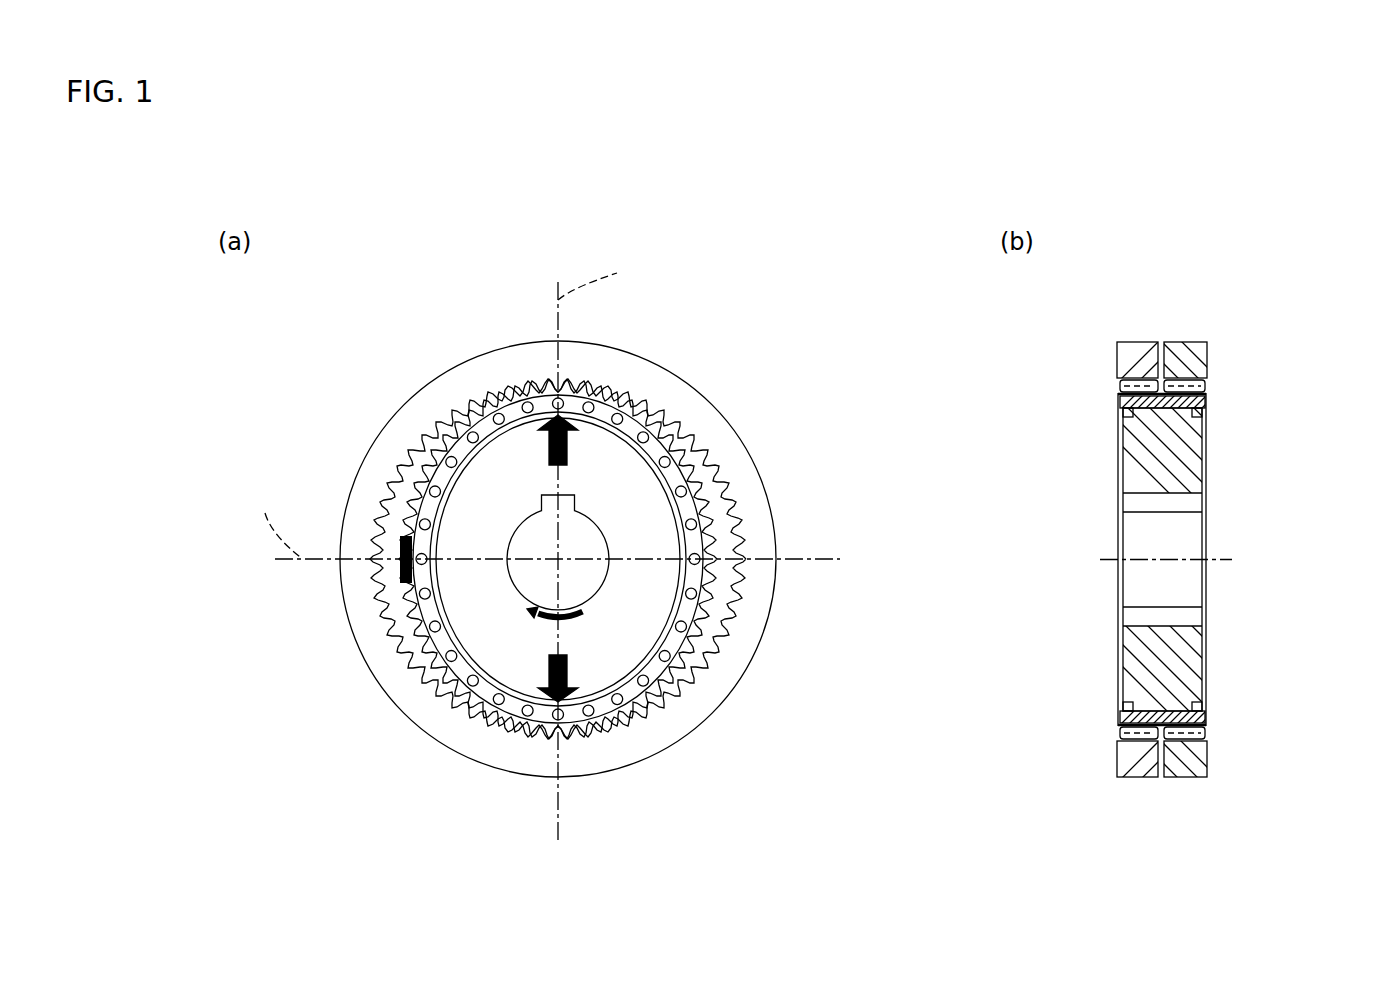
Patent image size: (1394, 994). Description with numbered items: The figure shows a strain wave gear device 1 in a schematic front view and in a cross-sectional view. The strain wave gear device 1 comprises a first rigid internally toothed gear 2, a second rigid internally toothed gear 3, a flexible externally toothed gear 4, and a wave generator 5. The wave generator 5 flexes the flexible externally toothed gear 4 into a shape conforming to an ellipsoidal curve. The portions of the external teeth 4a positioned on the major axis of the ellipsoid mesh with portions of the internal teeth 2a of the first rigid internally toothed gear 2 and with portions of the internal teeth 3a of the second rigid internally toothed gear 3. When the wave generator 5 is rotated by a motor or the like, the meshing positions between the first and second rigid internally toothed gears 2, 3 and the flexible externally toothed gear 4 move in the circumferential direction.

The strain wave gear device 1 is at (728, 375).
The first rigid internally toothed gear 2 is at (749, 462).
The internal teeth 2a is at (705, 467).
The second rigid internally toothed gear 3 is at (1102, 356).
The internal teeth 3a is at (1141, 396).
The flexible externally toothed gear 4 is at (714, 509).
The external teeth 4a is at (706, 543).
The wave generator 5 is at (657, 597).